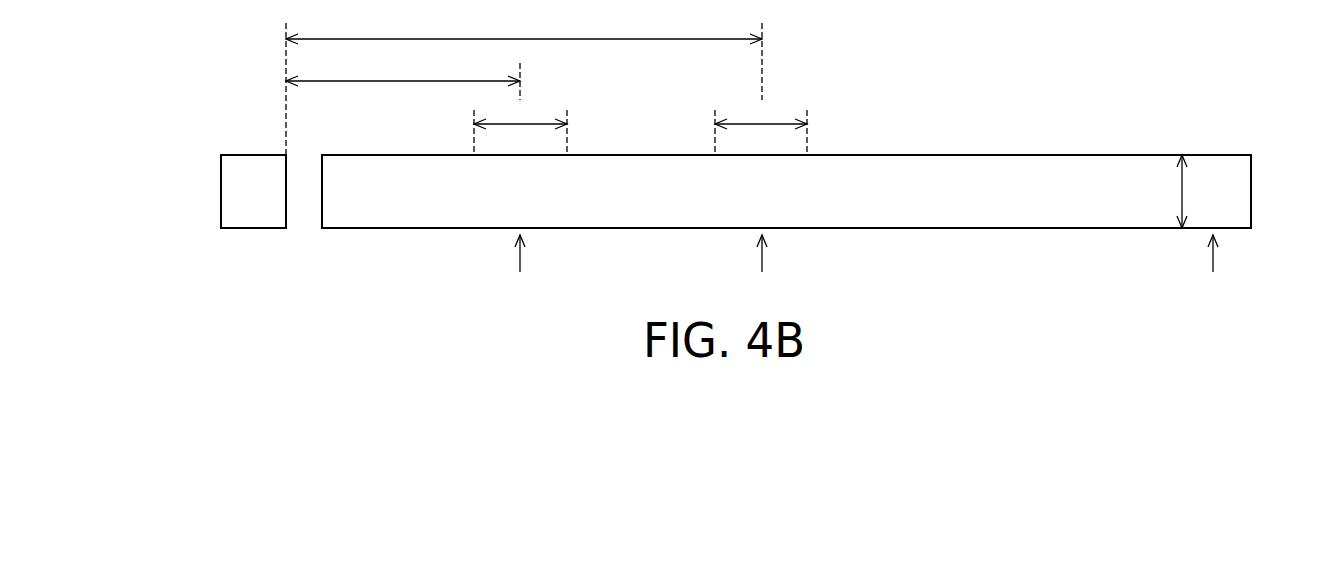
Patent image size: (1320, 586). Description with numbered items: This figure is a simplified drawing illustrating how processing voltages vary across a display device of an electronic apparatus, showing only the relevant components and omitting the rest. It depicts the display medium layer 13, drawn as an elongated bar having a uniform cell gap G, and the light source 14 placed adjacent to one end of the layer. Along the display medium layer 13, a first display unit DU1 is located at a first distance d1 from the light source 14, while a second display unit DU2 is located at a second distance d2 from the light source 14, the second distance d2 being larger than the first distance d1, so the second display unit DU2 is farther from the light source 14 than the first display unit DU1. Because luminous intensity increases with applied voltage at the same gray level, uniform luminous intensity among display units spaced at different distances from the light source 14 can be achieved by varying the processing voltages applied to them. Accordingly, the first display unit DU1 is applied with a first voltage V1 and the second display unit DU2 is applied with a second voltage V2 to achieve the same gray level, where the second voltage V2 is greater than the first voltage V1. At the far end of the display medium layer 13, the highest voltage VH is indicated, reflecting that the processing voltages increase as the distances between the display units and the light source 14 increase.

The display medium layer 13 is at (1230, 207).
The light source 14 is at (245, 195).
The first distance d1 is at (403, 75).
The second distance d2 is at (524, 81).
The first display unit DU1 is at (520, 126).
The second display unit DU2 is at (761, 126).
The cell gap G is at (1191, 191).
The first voltage V1 is at (521, 267).
The second voltage V2 is at (761, 267).
The voltage VH is at (1213, 269).